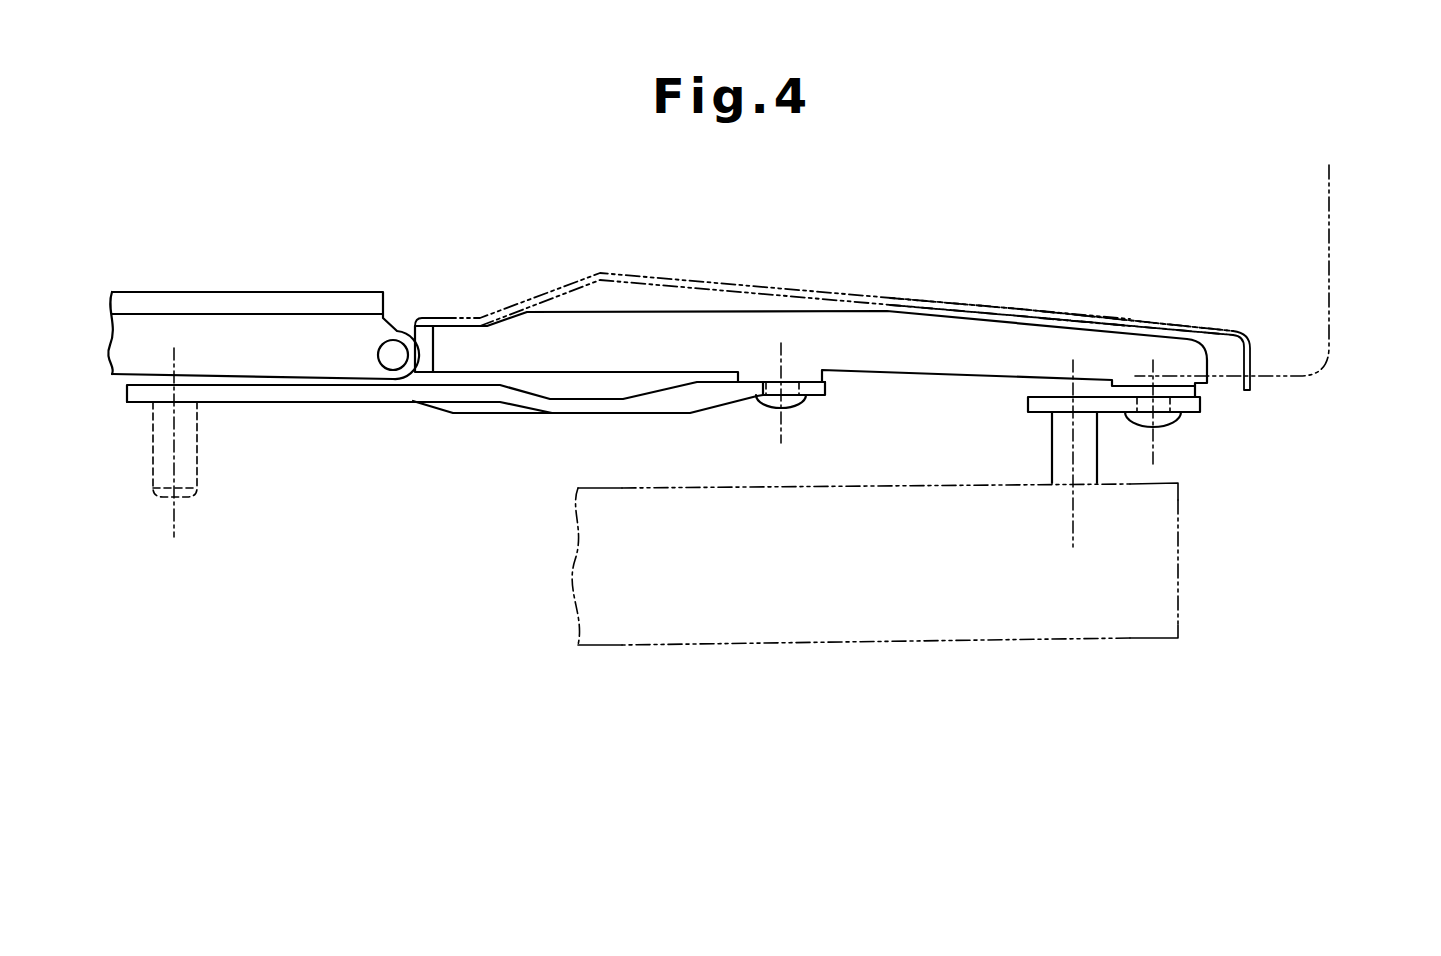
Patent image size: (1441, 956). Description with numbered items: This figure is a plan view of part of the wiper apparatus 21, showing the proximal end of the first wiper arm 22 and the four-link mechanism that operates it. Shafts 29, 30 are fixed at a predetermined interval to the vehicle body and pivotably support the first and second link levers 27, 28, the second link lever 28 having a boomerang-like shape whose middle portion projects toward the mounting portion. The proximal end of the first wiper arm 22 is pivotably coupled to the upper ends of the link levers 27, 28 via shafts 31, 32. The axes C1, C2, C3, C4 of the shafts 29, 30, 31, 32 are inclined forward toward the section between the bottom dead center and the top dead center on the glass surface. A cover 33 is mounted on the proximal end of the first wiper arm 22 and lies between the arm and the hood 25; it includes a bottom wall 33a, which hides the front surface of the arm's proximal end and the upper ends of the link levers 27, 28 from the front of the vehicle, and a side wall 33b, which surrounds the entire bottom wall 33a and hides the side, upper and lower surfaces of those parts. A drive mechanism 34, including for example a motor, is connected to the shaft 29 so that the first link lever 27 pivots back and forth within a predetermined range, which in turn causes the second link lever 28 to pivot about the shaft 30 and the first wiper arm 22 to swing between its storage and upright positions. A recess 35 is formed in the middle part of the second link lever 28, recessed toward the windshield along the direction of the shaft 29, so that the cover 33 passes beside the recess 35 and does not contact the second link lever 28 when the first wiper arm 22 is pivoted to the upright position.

The wiper apparatus 21 is at (750, 285).
The first wiper arm 22 is at (905, 318).
The hood 25 is at (1330, 250).
The first link lever 27 is at (1110, 413).
The second link lever 28 is at (337, 395).
The shaft 29 is at (1050, 445).
The shaft 30 is at (197, 452).
The shaft 31 is at (1170, 418).
The shaft 32 is at (797, 400).
The cover 33 is at (937, 300).
The bottom wall 33a is at (1060, 317).
The side wall 33b is at (1250, 357).
The drive mechanism 34 is at (1177, 568).
The recess 35 is at (590, 392).
The axis C1 is at (1074, 533).
The axis C2 is at (177, 523).
The axis C3 is at (1155, 452).
The axis C4 is at (780, 428).